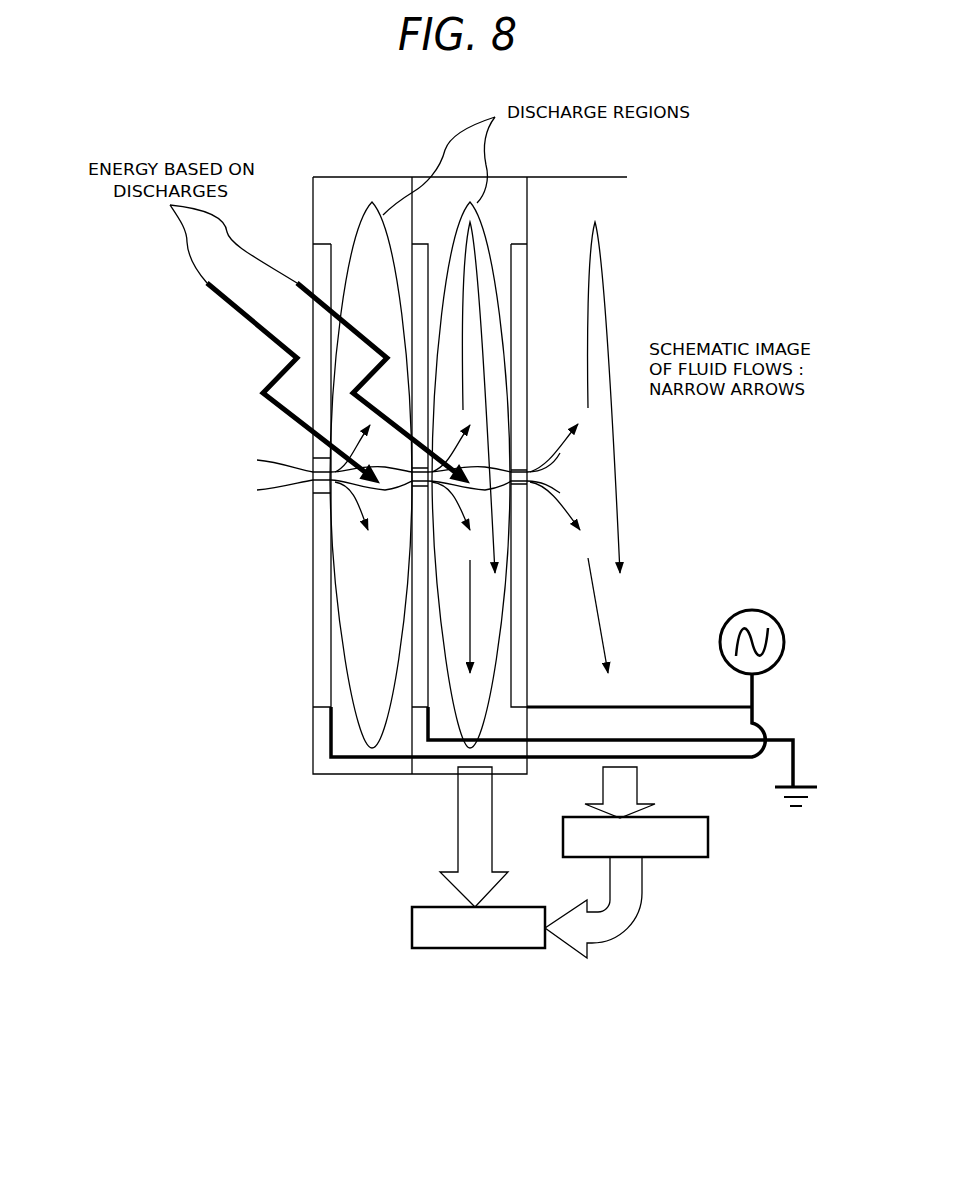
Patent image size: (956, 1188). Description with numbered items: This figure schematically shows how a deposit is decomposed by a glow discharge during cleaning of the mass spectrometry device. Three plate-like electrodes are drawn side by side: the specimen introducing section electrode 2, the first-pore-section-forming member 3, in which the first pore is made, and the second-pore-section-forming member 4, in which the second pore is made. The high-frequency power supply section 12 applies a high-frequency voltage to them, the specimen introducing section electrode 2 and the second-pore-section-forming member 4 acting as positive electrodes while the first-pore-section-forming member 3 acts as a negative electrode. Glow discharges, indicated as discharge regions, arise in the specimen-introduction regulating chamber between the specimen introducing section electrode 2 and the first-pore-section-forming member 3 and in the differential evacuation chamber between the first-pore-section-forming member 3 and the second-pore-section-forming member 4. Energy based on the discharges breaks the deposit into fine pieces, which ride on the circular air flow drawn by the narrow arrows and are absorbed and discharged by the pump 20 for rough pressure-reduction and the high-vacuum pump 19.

The specimen introducing section electrode 2 is at (312, 620).
The first-pore-section-forming member 3 is at (430, 685).
The second-pore-section-forming member 4 is at (512, 683).
The high-frequency power supply section 12 is at (773, 618).
The high-vacuum pump 19 is at (672, 857).
The pump for rough pressure-reduction 20 is at (475, 948).